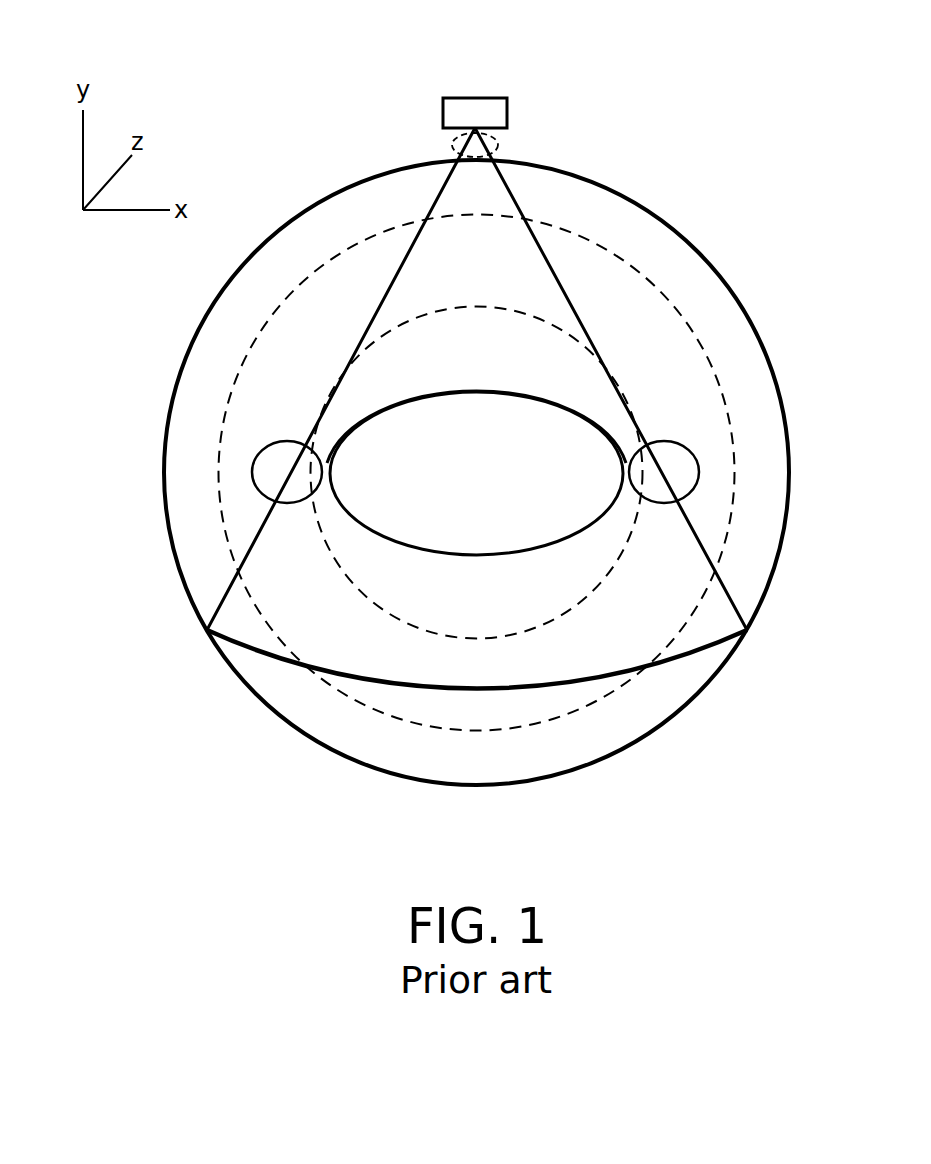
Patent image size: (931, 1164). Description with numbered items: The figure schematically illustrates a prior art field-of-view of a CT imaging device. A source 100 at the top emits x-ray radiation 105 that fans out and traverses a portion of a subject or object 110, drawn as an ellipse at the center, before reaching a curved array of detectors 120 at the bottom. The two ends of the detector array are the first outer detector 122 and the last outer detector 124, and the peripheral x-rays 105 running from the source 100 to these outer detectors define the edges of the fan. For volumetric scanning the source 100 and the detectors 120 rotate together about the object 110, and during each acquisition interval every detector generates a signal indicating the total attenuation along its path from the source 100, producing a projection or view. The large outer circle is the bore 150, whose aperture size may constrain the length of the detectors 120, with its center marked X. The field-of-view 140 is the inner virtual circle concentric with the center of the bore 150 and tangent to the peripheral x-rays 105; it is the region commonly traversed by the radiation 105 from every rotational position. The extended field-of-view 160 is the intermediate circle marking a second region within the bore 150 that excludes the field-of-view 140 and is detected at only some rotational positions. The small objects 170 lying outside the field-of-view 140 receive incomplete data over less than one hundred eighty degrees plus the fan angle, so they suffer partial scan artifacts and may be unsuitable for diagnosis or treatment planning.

The source 100 is at (462, 98).
The x-ray radiation 105 is at (499, 146).
The object 110 is at (623, 455).
The detectors 120 is at (675, 662).
The detector d0 122 is at (183, 660).
The detector dn 124 is at (765, 660).
The field-of-view 140 is at (483, 307).
The bore 150 is at (699, 251).
The extended field-of-view 160 is at (240, 365).
The object outside of the FOV 170 is at (668, 440).